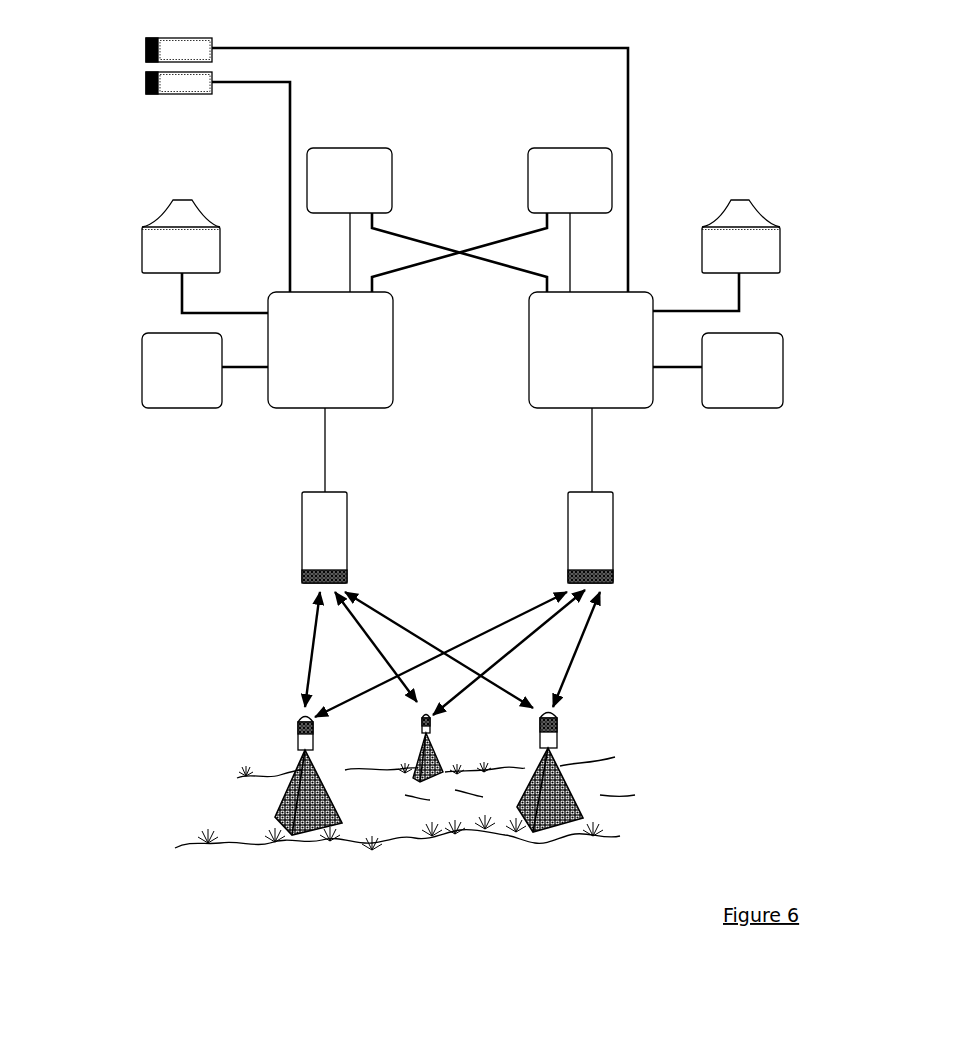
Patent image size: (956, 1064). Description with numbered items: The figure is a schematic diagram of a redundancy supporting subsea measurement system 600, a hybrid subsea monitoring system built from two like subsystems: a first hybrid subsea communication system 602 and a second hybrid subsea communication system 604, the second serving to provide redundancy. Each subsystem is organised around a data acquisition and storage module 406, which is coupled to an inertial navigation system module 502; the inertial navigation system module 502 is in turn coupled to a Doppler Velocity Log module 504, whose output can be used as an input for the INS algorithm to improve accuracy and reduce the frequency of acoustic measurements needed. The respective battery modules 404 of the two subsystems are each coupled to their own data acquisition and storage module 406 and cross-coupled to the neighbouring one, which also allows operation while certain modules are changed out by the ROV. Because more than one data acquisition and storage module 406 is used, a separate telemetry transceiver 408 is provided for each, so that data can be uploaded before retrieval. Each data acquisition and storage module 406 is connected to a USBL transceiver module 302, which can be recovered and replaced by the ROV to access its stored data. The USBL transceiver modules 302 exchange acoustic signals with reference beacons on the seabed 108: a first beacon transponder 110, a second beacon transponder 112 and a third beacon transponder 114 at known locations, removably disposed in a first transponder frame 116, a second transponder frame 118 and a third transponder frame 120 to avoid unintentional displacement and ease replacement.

The seabed 108 is at (185, 851).
The first beacon transponder 110 is at (298, 743).
The second beacon transponder 112 is at (432, 730).
The third beacon transponder 114 is at (557, 740).
The first transponder frame 116 is at (277, 808).
The second transponder frame 118 is at (413, 760).
The third transponder frame 120 is at (567, 805).
The USBL transceiver module 302 is at (457, 495).
The battery module 404 is at (459, 220).
The data acquisition and storage module 406 is at (460, 350).
The telemetry transceiver 408 is at (187, 51).
The inertial navigation system module 502 is at (462, 370).
The Doppler Velocity Log module 504 is at (461, 256).
The redundancy supporting subsea measurement system 600 is at (136, 655).
The first hybrid subsea communication system 602 is at (177, 492).
The second hybrid subsea communication system 604 is at (709, 479).